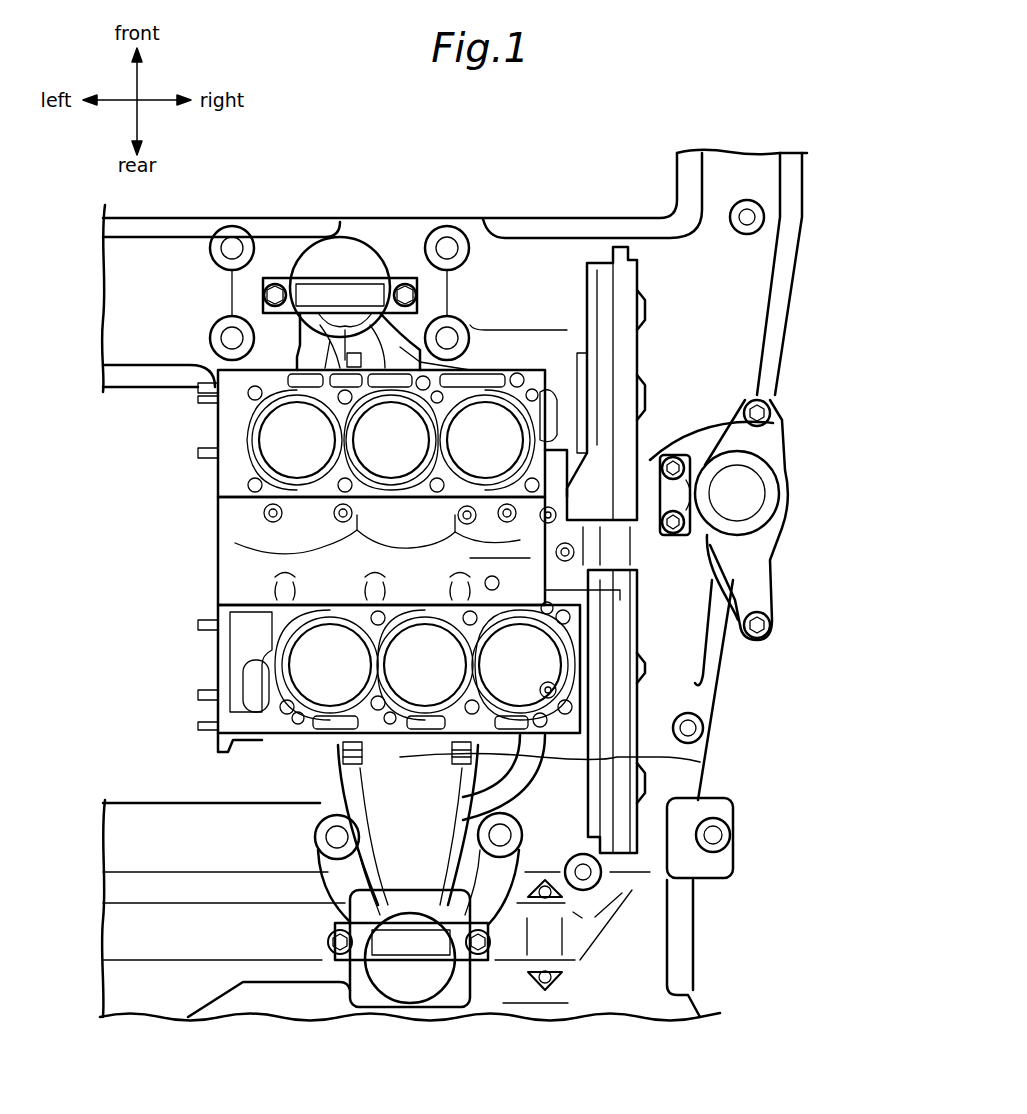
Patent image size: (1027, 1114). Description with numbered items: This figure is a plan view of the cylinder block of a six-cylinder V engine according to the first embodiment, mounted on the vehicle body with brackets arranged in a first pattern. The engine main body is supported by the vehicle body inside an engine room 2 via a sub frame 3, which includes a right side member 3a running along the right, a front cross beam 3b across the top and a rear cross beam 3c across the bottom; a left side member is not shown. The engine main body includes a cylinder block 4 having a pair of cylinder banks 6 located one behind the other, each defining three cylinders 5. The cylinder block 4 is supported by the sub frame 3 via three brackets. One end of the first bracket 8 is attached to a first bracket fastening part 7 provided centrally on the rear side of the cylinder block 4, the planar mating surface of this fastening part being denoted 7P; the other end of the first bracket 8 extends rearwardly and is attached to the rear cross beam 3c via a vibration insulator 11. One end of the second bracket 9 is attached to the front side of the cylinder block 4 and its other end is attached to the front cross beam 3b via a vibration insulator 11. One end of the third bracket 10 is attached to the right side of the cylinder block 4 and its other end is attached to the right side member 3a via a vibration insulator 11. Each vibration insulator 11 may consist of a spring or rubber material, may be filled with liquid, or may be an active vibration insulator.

The engine room 2 is at (379, 550).
The sub frame 3 is at (187, 806).
The right side member 3a is at (662, 703).
The front cross beam 3b is at (538, 262).
The rear cross beam 3c is at (298, 940).
The cylinder block 4 is at (218, 572).
The cylinders 5 is at (470, 457).
The cylinder banks 6 is at (235, 468).
The first bracket fastening part 7 is at (480, 762).
The planar mating surface 7P is at (640, 756).
The first bracket 8 is at (410, 862).
The second bracket 9 is at (320, 327).
The third bracket 10 is at (663, 458).
The vibration insulator 11 is at (337, 247).